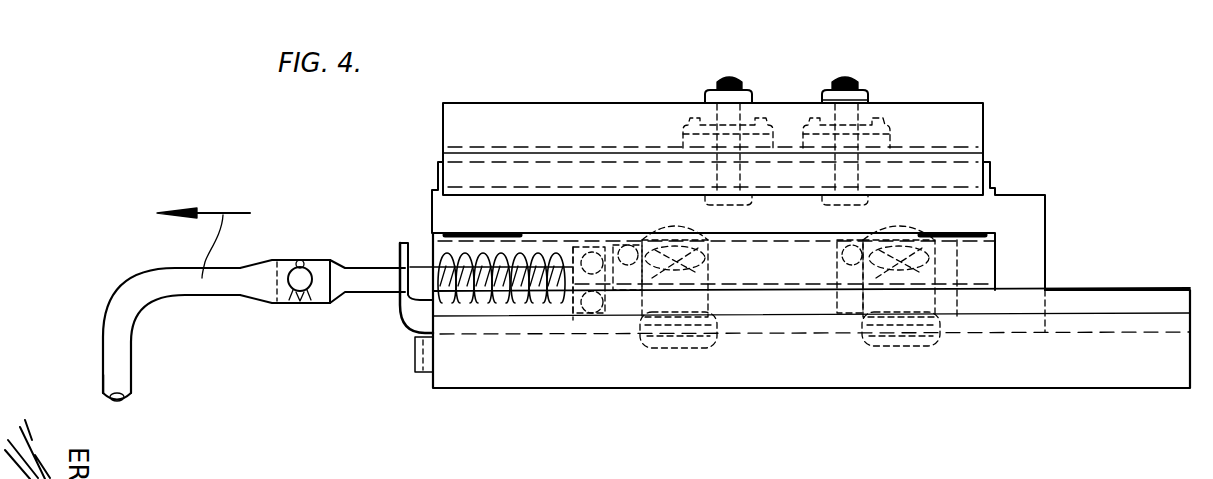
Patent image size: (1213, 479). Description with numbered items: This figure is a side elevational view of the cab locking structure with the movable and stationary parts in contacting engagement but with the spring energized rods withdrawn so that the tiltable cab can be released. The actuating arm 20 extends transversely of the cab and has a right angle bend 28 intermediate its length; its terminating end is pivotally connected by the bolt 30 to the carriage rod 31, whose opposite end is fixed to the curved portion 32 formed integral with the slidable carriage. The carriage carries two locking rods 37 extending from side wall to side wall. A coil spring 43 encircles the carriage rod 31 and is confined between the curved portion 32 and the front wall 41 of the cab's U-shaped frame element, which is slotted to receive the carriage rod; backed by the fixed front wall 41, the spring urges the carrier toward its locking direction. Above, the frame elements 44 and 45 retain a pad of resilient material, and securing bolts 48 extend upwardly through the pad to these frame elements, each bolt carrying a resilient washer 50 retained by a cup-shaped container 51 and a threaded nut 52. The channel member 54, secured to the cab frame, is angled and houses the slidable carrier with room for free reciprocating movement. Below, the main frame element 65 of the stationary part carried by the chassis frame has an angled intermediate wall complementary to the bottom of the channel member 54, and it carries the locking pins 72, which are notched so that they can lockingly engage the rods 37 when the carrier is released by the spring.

The actuating arm 20 is at (120, 292).
The right angle bend 28 is at (123, 364).
The bolt 30 is at (293, 285).
The carriage rod 31 is at (359, 280).
The curved portion 32 is at (575, 320).
The locking rods 37 is at (646, 245).
The front wall 41 is at (410, 313).
The coil spring 43 is at (513, 305).
The frame element 44 is at (580, 135).
The frame element 45 is at (620, 165).
The securing bolts 48 is at (727, 80).
The washer 50 is at (760, 110).
The cup-shaped container 51 is at (885, 146).
The threaded nut 52 is at (866, 96).
The channel member 54 is at (472, 218).
The main frame element 65 is at (822, 354).
The locking pins 72 is at (712, 250).